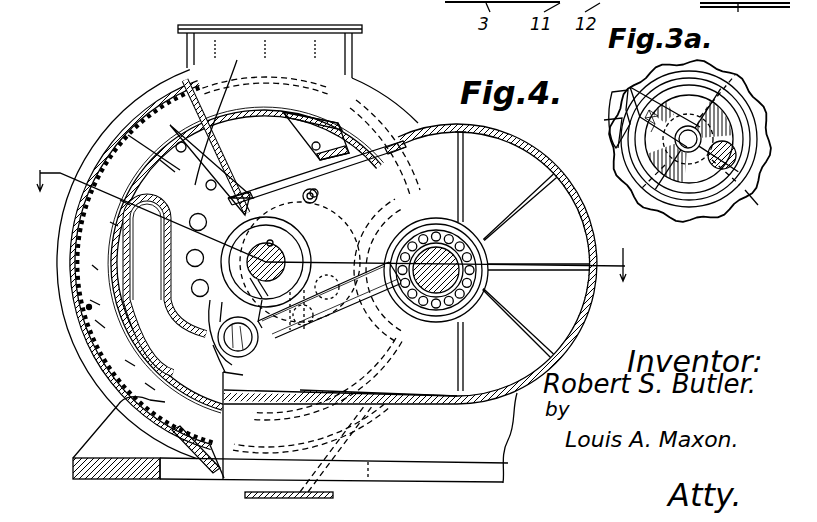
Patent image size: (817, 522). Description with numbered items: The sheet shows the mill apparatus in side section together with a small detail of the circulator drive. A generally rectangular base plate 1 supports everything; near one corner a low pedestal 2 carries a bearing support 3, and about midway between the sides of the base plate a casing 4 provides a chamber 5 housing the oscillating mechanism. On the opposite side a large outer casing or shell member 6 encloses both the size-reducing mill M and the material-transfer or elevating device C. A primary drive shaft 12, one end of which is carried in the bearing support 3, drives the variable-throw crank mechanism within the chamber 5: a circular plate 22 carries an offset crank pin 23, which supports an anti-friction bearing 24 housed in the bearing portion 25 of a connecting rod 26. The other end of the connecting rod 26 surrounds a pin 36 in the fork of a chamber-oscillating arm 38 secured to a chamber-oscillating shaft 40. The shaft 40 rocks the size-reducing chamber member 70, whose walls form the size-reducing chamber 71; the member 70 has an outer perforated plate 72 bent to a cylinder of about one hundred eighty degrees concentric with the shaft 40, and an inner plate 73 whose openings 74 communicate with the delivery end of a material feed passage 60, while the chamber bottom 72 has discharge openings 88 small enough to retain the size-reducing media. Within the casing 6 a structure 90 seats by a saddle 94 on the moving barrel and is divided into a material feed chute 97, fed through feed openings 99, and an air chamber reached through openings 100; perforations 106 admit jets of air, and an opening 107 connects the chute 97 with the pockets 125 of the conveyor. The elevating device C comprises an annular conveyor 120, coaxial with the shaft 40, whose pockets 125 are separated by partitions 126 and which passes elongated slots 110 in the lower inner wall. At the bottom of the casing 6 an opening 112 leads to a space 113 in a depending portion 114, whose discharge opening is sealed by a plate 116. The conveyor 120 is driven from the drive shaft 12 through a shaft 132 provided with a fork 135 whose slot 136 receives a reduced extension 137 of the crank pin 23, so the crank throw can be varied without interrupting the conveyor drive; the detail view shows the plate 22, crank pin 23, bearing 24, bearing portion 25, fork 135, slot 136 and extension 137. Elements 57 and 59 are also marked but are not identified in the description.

In FIG. 4, the base plate 1 is at (70, 466).
In FIG. 3A, the pedestal 2 is at (745, 18).
In FIG. 4, the bearing support 3 is at (330, 225).
In FIG. 4, the casing 4 is at (564, 185).
In FIG. 4, the chamber 5 is at (568, 215).
In FIG. 4, the outer casing or shell member 6 is at (405, 132).
In FIG. 3A, the primary drive shaft 12 is at (714, 200).
In FIG. 3A, the circular plate 22 is at (752, 112).
In FIG. 4, the crank pin 23 is at (470, 285).
In FIG. 3A, the crank pin 23 is at (733, 88).
In FIG. 3A, the anti-friction bearing 24 is at (643, 112).
In FIG. 3A, the bearing portion 25 is at (615, 140).
In FIG. 4, the connecting rod 26 is at (350, 305).
In FIG. 3A, the connecting rod 26 is at (625, 122).
In FIG. 4, the pin 36 is at (226, 348).
In FIG. 4, the chamber-oscillating arm 38 is at (300, 335).
In FIG. 4, the chamber-oscillating shaft 40 is at (312, 238).
In FIG. 4, the guide 57 is at (160, 160).
In FIG. 4, the guide slot 59 is at (165, 300).
In FIG. 4, the material feed passage 60 is at (215, 322).
In FIG. 4, the size-reducing chamber member 70 is at (125, 202).
In FIG. 4, the size-reducing chamber 71 is at (90, 300).
In FIG. 4, the outer perforated plate 72 is at (128, 362).
In FIG. 4, the inner plate 73 is at (191, 293).
In FIG. 4, the openings 74 is at (148, 384).
In FIG. 4, the discharge openings 88 is at (120, 255).
In FIG. 4, the structure 90 is at (130, 140).
In FIG. 4, the saddle 94 is at (300, 205).
In FIG. 4, the material feed chute 97 is at (320, 192).
In FIG. 4, the feed openings 99 is at (340, 120).
In FIG. 4, the openings 100 is at (283, 113).
In FIG. 4, the perforations 106 is at (180, 90).
In FIG. 4, the opening 107 is at (355, 150).
In FIG. 4, the elongated slots 110 is at (160, 404).
In FIG. 4, the opening 112 is at (190, 447).
In FIG. 4, the space 113 is at (228, 460).
In FIG. 4, the depending portion 114 is at (217, 460).
In FIG. 4, the plate 116 is at (328, 495).
In FIG. 4, the annular conveyor 120 is at (128, 135).
In FIG. 4, the pockets 125 is at (92, 266).
In FIG. 4, the partitions 126 is at (88, 308).
In FIG. 3A, the shaft 132 is at (750, 195).
In FIG. 3A, the fork 135 is at (700, 174).
In FIG. 3A, the slot 136 is at (645, 88).
In FIG. 3A, the reduced extension 137 is at (668, 180).
In FIG. 4, the mill M is at (112, 224).
In FIG. 4, the material-transfer or elevating device C is at (98, 322).